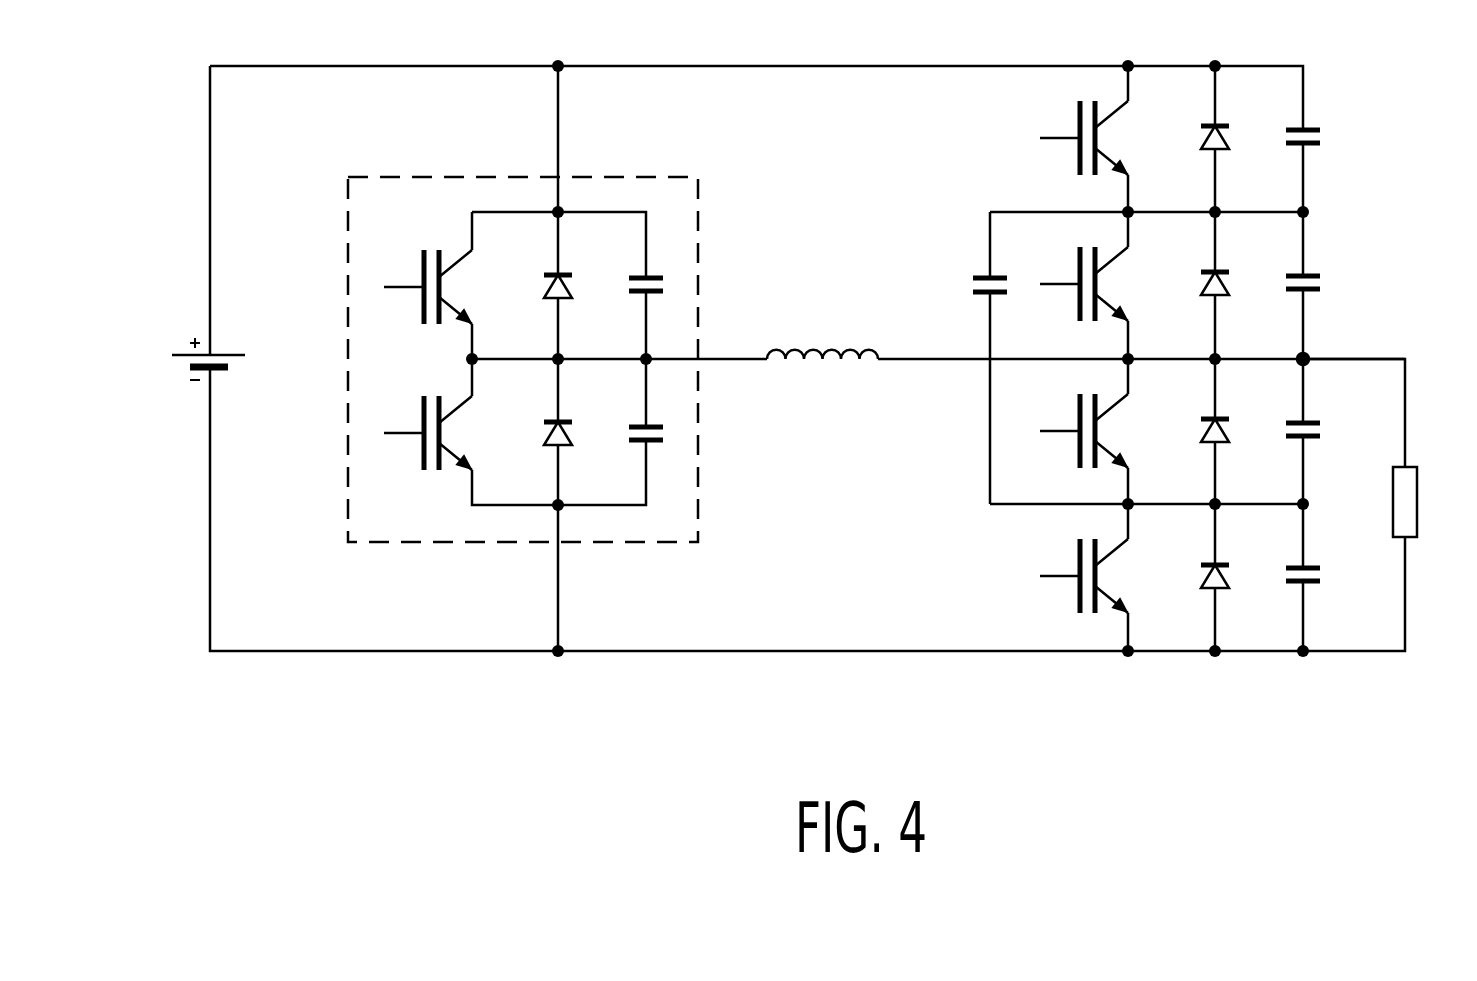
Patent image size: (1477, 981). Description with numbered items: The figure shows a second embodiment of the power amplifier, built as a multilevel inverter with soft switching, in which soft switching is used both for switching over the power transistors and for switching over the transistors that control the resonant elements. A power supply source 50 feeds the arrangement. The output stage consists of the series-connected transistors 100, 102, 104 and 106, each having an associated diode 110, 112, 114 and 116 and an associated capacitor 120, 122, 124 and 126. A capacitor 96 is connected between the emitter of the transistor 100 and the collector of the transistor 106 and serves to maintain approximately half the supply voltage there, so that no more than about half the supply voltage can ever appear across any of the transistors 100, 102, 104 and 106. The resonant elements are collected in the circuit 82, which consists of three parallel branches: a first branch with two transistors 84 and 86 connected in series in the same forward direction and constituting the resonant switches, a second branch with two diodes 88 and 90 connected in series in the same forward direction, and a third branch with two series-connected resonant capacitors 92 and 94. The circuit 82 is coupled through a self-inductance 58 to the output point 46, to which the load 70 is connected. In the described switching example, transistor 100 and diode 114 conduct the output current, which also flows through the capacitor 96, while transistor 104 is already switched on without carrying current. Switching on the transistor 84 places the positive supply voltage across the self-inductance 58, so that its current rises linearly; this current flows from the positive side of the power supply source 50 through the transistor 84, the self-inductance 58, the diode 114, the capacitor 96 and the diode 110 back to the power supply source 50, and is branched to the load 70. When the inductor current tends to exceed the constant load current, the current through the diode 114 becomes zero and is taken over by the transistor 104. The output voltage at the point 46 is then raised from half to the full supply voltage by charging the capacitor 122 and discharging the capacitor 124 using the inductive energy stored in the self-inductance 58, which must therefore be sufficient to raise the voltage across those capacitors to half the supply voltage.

The point 46 is at (1305, 357).
The power supply source 50 is at (185, 361).
The self-inductance 58 is at (812, 345).
The load 70 is at (1417, 504).
The circuit 82 is at (434, 177).
The transistor 84 is at (450, 287).
The transistor 86 is at (450, 433).
The diode 88 is at (573, 293).
The diode 90 is at (573, 440).
The resonant capacitor 92 is at (627, 285).
The resonant capacitor 94 is at (627, 432).
The capacitor 96 is at (972, 280).
The transistor 100 is at (1108, 137).
The transistor 102 is at (1108, 284).
The transistor 104 is at (1108, 431).
The transistor 106 is at (1108, 576).
The diode 110 is at (1230, 145).
The diode 112 is at (1230, 292).
The diode 114 is at (1230, 439).
The diode 116 is at (1230, 585).
The capacitor 120 is at (1285, 138).
The capacitor 122 is at (1285, 283).
The capacitor 124 is at (1285, 430).
The capacitor 126 is at (1285, 575).